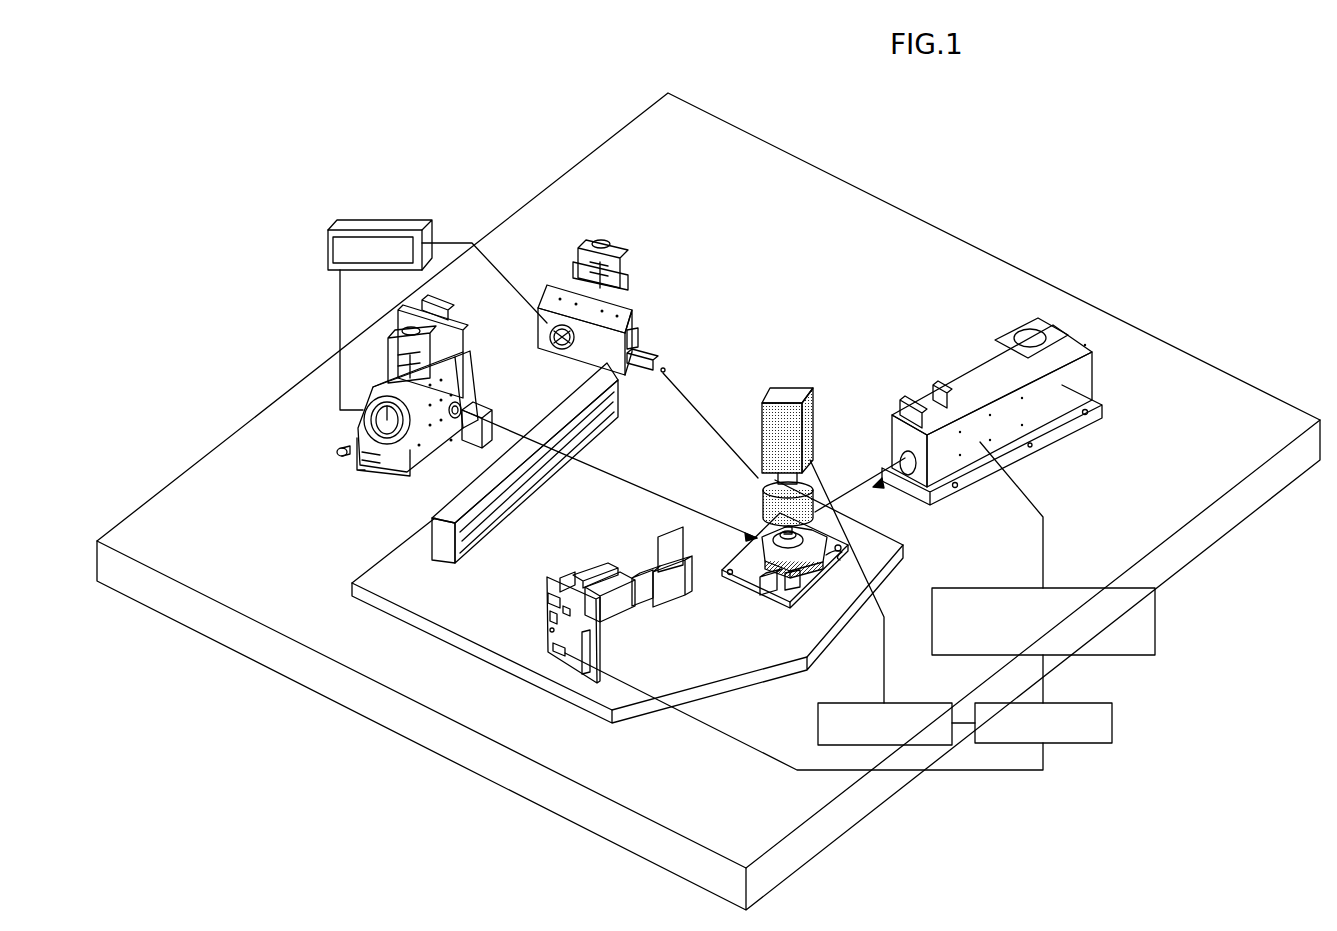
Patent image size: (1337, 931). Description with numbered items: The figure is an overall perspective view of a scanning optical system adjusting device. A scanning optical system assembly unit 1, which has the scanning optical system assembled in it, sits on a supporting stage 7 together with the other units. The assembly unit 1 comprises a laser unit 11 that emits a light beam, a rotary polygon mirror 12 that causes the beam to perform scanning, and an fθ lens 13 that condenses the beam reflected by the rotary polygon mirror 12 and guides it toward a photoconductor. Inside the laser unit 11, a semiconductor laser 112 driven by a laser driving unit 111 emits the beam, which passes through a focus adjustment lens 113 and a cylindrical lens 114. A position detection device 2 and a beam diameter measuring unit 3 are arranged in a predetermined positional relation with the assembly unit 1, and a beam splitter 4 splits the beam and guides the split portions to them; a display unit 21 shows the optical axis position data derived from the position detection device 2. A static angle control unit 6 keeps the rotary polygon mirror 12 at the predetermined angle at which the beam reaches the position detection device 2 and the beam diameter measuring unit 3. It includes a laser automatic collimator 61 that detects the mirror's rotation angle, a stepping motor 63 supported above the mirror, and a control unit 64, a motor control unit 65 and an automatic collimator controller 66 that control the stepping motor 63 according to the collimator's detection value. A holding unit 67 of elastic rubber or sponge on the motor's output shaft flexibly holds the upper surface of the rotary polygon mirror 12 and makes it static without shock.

The scanning optical system assembly unit 1 is at (912, 540).
The position detection device 2 is at (465, 328).
The beam diameter measuring unit 3 is at (630, 288).
The beam splitter 4 is at (488, 412).
The static angle control unit 6 is at (927, 334).
The supporting stage 7 is at (1190, 354).
The laser unit 11 is at (618, 630).
The rotary polygon mirror 12 is at (823, 566).
The fθ lens 13 is at (612, 420).
The display unit 21 is at (327, 248).
The laser automatic collimator 61 is at (1065, 452).
The stepping motor 63 is at (818, 444).
The control unit 64 is at (1113, 722).
The motor control unit 65 is at (912, 703).
The automatic collimator controller 66 is at (1092, 588).
The holding unit 67 is at (813, 504).
The laser driving unit 111 is at (589, 668).
The semiconductor laser 112 is at (607, 608).
The focus adjustment lens 113 is at (587, 570).
The cylindrical lens 114 is at (668, 583).